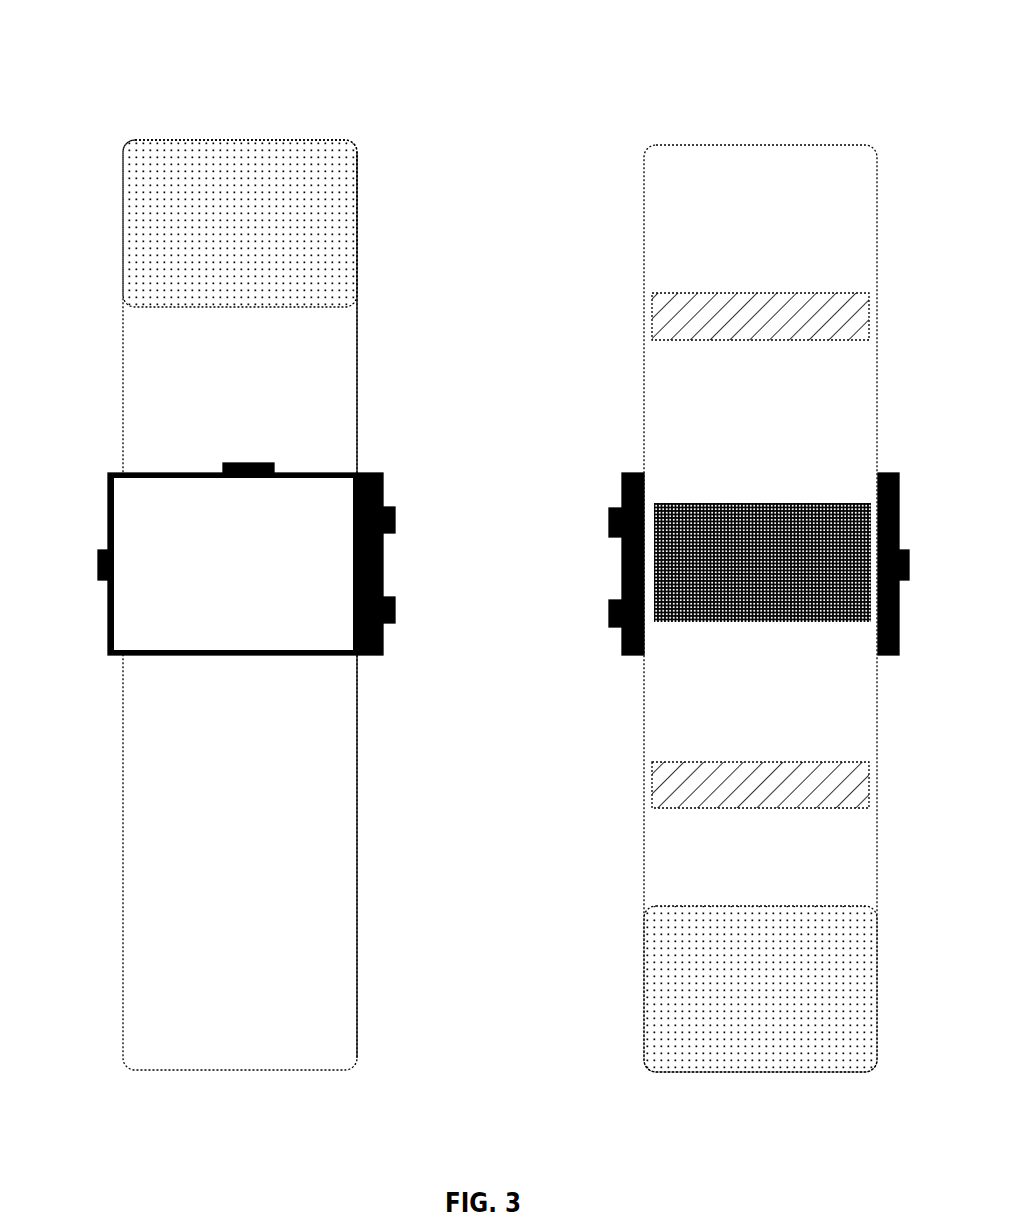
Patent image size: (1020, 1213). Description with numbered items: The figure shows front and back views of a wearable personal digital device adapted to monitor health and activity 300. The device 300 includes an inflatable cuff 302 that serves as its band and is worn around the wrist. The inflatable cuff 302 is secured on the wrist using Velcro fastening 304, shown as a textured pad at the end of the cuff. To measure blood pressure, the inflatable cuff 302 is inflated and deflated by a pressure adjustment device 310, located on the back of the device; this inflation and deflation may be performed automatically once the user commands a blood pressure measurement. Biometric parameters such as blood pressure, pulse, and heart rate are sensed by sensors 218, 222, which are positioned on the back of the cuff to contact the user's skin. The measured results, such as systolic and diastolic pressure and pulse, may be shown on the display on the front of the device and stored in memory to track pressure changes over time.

The WPD device adapted to monitor health and activity 300 is at (905, 60).
The inflatable cuff 302 is at (123, 377).
The Velcro fastening 304 is at (122, 221).
The sensor 218 is at (668, 316).
The pressure adjustment device 310 is at (655, 560).
The sensor 222 is at (668, 988).